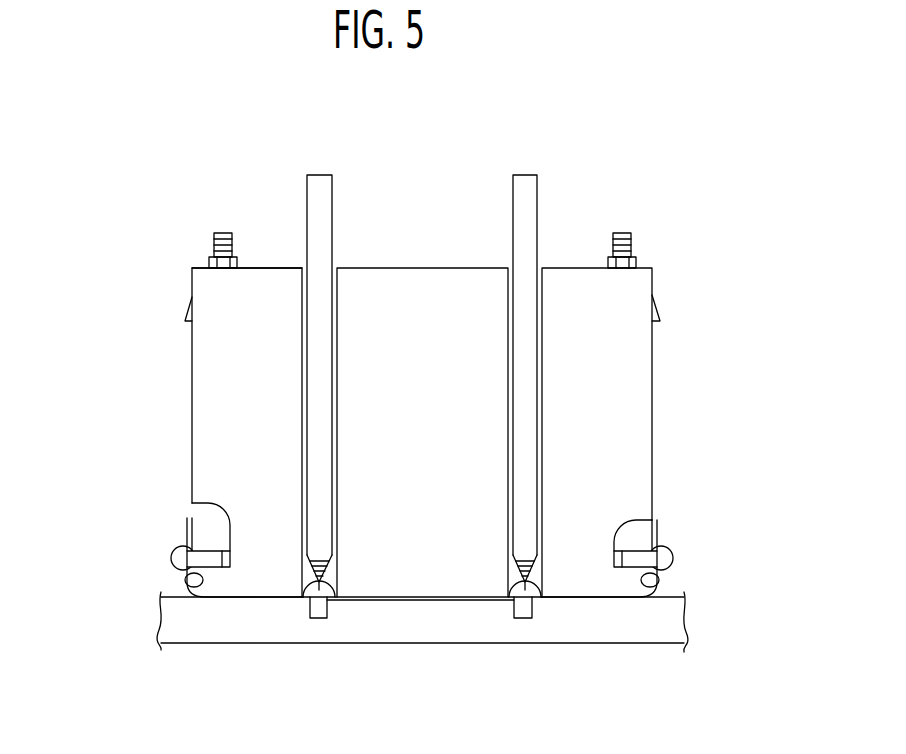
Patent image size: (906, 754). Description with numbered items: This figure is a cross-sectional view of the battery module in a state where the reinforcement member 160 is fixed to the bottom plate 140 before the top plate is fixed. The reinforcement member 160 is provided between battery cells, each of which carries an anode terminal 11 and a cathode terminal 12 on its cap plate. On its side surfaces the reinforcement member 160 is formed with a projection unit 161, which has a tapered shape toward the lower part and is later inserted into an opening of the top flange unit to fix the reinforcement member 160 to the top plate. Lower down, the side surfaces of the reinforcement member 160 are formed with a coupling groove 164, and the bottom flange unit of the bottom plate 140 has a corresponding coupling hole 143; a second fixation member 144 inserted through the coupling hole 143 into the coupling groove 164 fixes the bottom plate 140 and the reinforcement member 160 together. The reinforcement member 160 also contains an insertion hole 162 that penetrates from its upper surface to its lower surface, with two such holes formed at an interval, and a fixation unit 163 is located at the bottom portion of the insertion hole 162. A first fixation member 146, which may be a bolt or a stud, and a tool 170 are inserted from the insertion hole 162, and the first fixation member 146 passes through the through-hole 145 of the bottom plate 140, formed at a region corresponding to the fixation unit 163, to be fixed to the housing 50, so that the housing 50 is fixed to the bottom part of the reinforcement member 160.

The anode terminal 11 is at (223, 233).
The cathode terminal 12 is at (621, 233).
The housing 50 is at (677, 625).
The bottom plate 140 is at (658, 526).
The coupling hole 143 is at (192, 582).
The second fixation member 144 is at (178, 557).
The through-hole 145 is at (328, 602).
The first fixation member 146 is at (312, 618).
The reinforcement member 160 is at (642, 378).
The projection unit 161 is at (192, 300).
The insertion hole 162 is at (508, 266).
The fixation unit 163 is at (502, 597).
The coupling groove 164 is at (200, 504).
The tool 170 is at (325, 175).